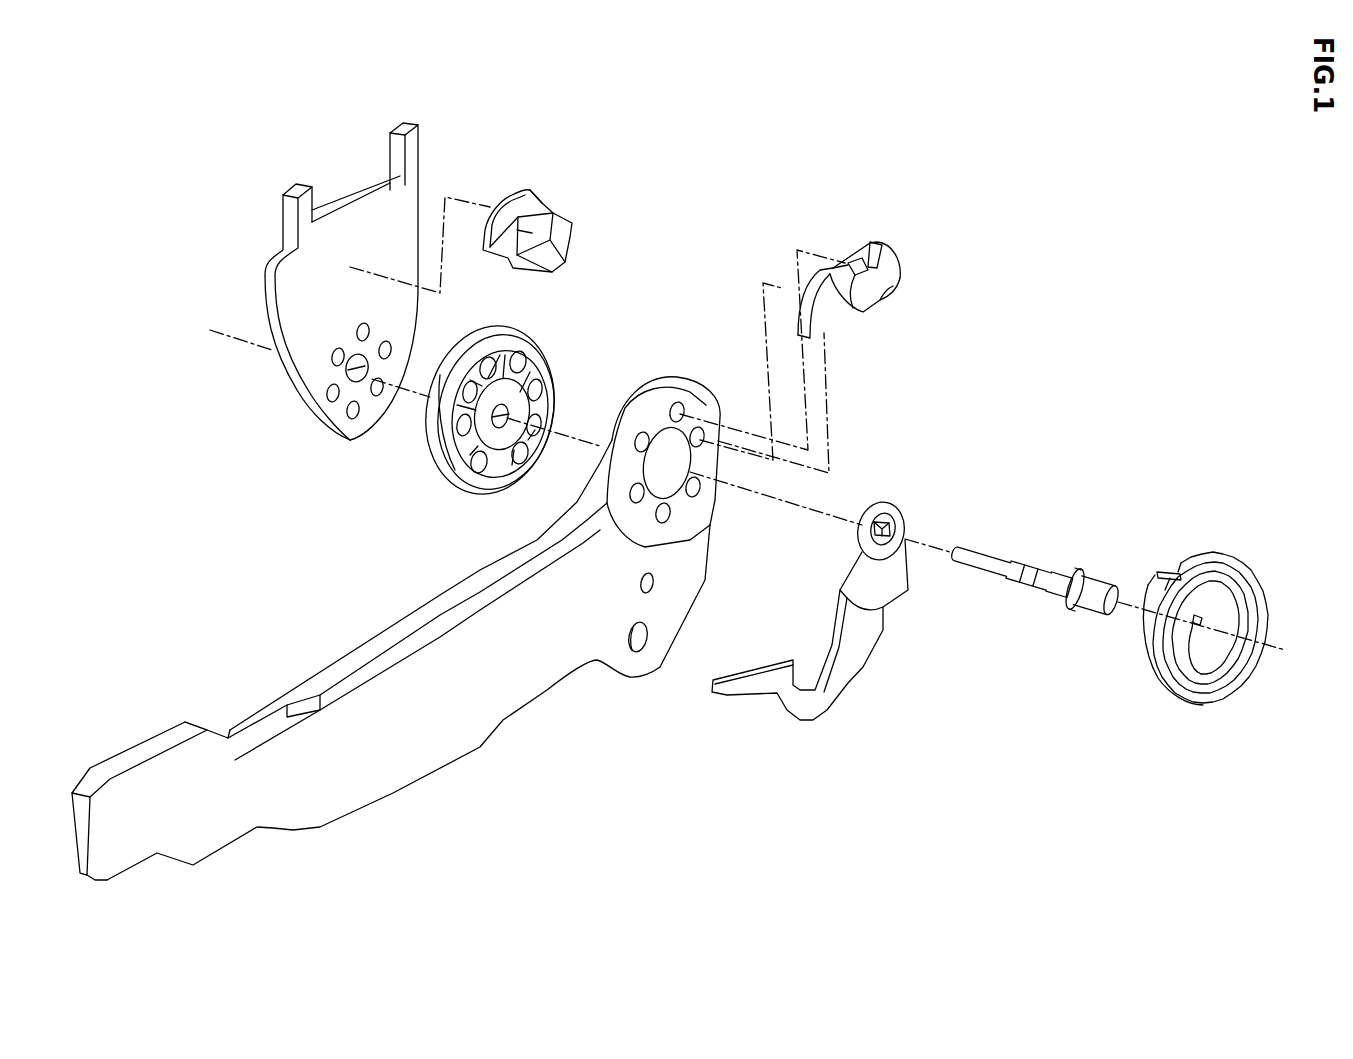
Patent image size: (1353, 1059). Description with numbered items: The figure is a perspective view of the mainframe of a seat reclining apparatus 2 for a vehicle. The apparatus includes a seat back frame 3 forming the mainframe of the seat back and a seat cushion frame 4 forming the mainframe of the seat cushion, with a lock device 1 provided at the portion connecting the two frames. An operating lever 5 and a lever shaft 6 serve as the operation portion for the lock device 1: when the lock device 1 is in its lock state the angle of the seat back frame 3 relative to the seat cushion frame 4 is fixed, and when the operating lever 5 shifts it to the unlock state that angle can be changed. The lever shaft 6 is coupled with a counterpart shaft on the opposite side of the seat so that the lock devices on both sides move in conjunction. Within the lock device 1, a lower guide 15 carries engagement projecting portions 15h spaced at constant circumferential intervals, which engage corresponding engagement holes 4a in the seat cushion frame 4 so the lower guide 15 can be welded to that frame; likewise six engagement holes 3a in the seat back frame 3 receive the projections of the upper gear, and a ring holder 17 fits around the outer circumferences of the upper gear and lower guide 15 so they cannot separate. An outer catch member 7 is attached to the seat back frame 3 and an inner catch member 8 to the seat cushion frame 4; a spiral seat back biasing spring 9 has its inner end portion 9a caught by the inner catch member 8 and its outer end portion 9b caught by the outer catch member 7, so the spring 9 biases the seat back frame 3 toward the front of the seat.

The lock device 1 is at (486, 401).
The seat reclining apparatus 2 is at (750, 203).
The seat back frame 3 is at (365, 299).
The engagement holes 3a is at (372, 395).
The seat cushion frame 4 is at (409, 618).
The engagement holes 4a is at (718, 430).
The operating lever 5 is at (827, 698).
The lever shaft 6 is at (1033, 560).
The outer catch member 7 is at (563, 237).
The inner catch member 8 is at (900, 267).
The seat back biasing spring 9 is at (1200, 589).
The inner end portion 9a is at (1203, 623).
The outer end portion 9b is at (1170, 573).
The lower guide 15 is at (497, 473).
The engagement projecting portions 15h is at (550, 392).
The ring holder 17 is at (490, 330).